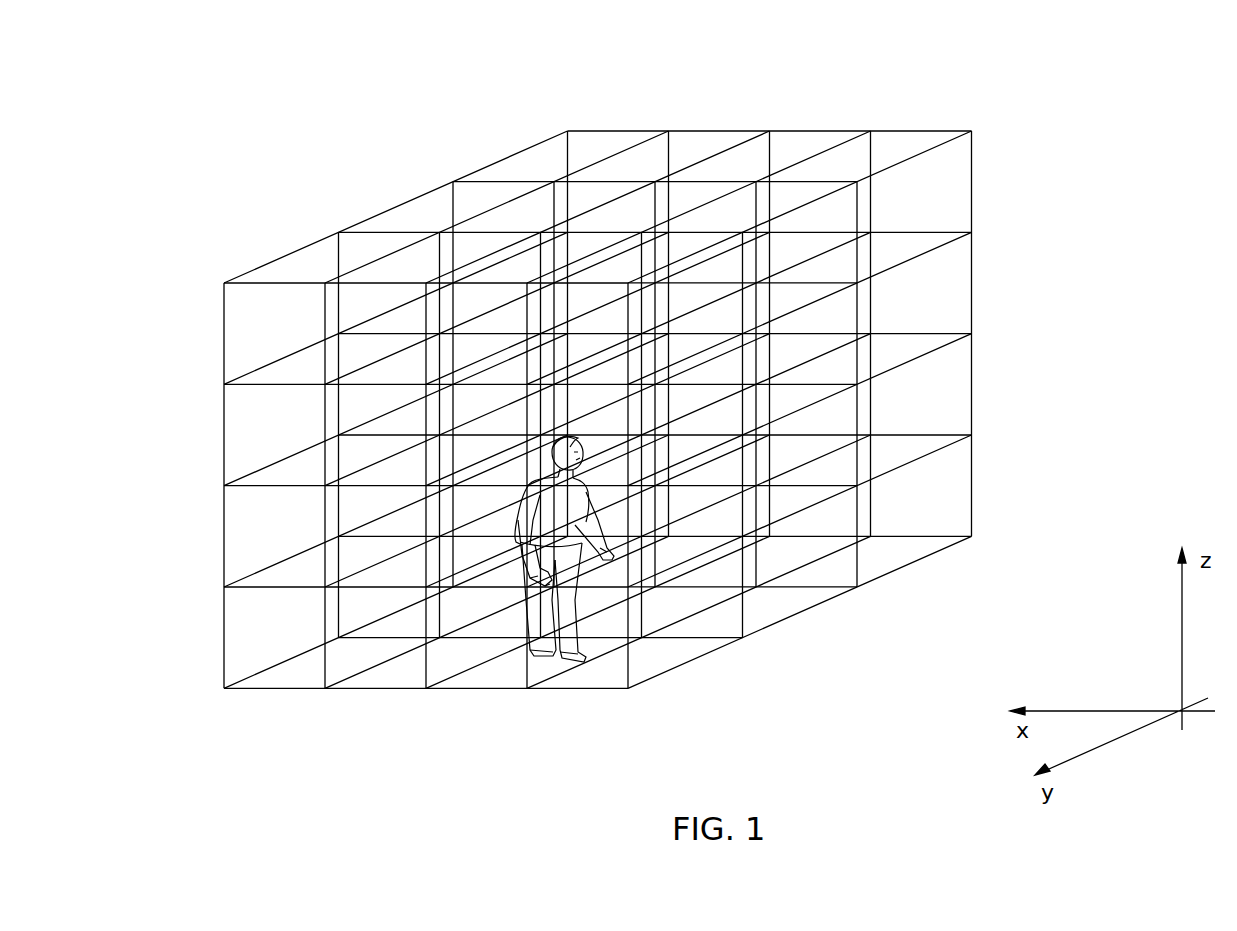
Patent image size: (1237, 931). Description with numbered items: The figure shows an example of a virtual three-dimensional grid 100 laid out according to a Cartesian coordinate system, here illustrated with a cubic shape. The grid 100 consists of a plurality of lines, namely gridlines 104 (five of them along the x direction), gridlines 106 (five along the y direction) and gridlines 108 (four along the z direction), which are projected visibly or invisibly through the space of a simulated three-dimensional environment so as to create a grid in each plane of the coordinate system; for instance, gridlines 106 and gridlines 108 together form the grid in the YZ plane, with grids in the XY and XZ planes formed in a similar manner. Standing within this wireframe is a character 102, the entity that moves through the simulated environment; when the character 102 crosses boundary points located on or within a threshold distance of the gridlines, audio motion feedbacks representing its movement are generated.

The virtual 3D grid 100 is at (567, 73).
The character 102 is at (605, 557).
The gridlines x1-x5 104 is at (258, 688).
The gridlines y1-y5 106 is at (933, 553).
The gridlines z1-z4 108 is at (770, 709).